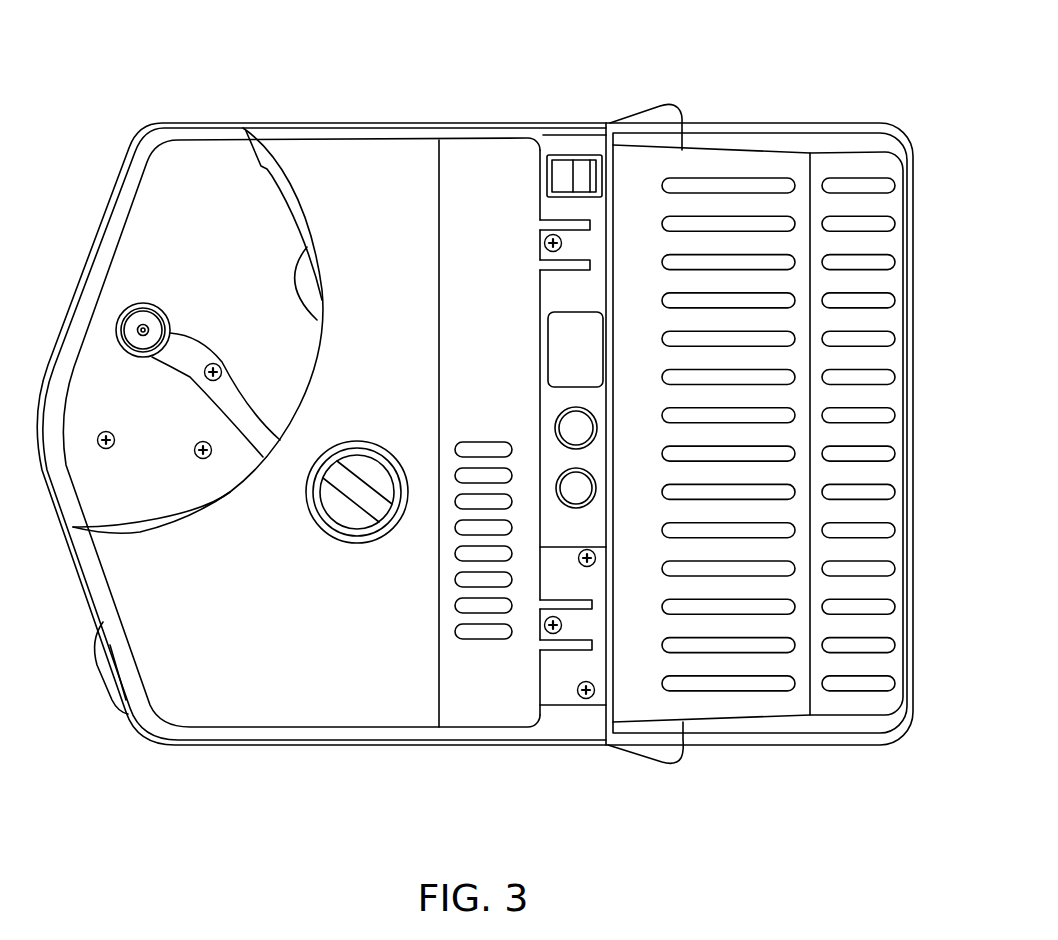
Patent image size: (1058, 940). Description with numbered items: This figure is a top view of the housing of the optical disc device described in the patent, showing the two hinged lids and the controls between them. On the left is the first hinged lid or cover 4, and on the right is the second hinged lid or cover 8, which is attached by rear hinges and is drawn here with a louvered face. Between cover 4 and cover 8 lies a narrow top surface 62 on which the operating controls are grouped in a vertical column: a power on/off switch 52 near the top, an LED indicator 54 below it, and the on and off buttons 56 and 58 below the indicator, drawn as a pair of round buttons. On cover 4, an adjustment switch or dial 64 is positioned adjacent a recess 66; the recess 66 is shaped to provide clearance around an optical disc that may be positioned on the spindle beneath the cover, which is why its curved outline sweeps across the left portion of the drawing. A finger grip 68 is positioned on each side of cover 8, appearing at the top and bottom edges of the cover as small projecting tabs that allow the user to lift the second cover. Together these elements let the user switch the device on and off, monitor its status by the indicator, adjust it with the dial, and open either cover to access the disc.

The first hinged cover 4 is at (253, 705).
The second hinged cover 8 is at (780, 708).
The power on/off switch 52 is at (575, 167).
The LED indicator 54 is at (561, 365).
The on button 56 is at (559, 495).
The off button 58 is at (557, 413).
The top surface 62 is at (577, 715).
The adjustment switch or dial 64 is at (363, 545).
The recess 66 is at (283, 200).
The finger grip 68 is at (672, 753).